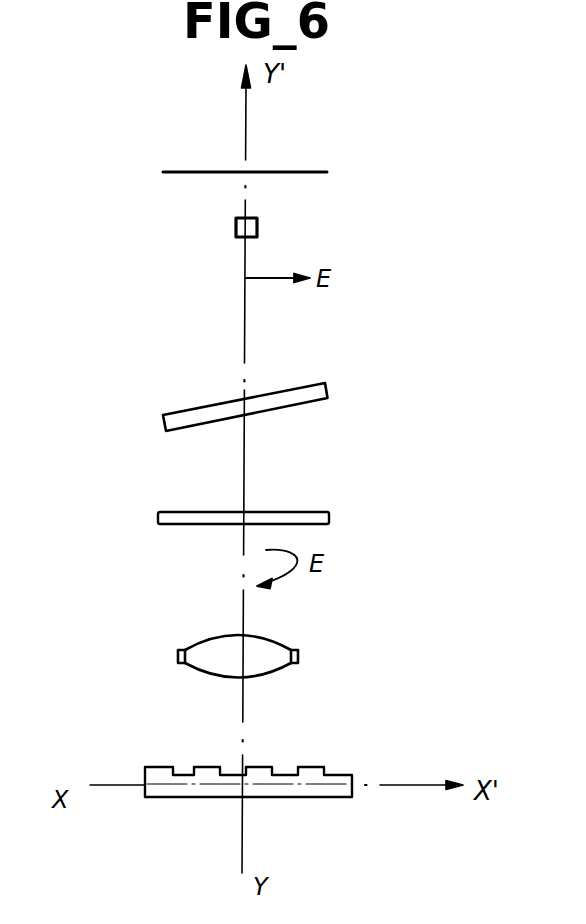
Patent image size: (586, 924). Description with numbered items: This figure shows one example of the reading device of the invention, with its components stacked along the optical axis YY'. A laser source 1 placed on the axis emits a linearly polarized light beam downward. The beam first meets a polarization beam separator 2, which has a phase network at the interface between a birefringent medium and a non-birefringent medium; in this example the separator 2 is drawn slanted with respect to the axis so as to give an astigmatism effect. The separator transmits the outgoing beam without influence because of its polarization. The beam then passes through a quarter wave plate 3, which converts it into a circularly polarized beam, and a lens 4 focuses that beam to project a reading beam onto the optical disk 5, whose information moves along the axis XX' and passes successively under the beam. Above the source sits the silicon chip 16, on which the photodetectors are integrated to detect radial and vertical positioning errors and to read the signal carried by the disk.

The silicon chip 16 is at (178, 172).
The laser source 1 is at (235, 228).
The polarization beam separator 2 is at (176, 414).
The quarter wave plate 3 is at (158, 516).
The lens 4 is at (180, 655).
The optical disk 5 is at (156, 768).